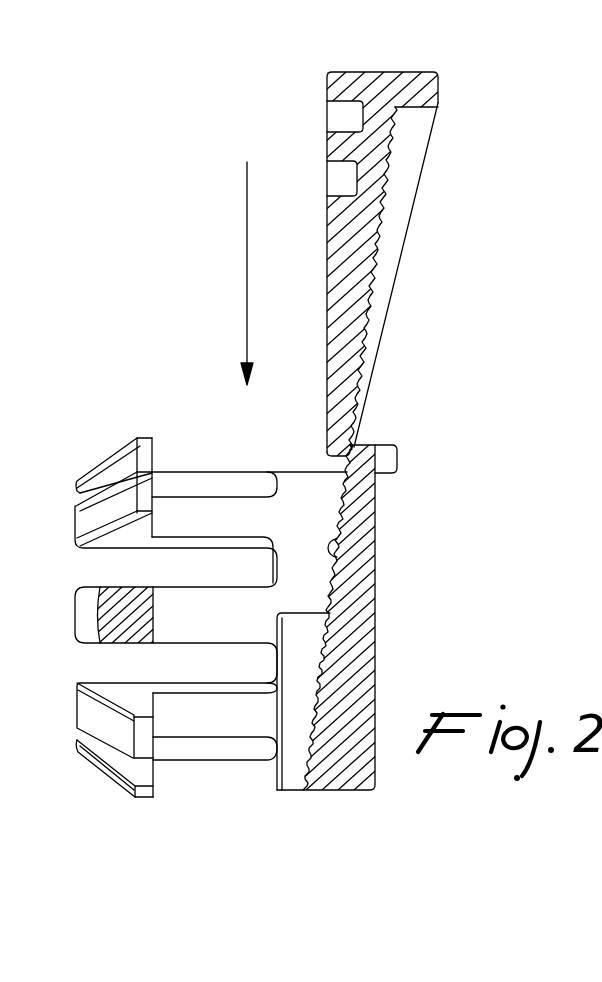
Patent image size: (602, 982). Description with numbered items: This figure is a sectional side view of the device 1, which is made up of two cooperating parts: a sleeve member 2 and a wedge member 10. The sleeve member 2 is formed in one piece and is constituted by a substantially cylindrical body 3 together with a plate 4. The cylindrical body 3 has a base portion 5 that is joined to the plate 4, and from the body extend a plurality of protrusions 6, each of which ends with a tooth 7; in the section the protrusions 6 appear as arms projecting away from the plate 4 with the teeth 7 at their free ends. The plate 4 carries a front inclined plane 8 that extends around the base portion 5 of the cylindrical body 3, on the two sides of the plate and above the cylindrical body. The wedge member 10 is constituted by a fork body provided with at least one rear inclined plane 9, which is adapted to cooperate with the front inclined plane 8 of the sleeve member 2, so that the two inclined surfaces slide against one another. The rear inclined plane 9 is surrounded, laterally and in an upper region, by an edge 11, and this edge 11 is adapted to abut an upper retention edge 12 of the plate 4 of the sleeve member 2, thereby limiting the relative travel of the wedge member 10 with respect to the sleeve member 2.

The device 1 is at (301, 436).
The sleeve member 2 is at (301, 649).
The cylindrical body 3 is at (173, 618).
The plate 4 is at (334, 792).
The base portion 5 is at (303, 492).
The protrusion 6 is at (190, 523).
The tooth 7 is at (105, 460).
The front inclined plane 8 is at (328, 543).
The rear inclined plane 9 is at (380, 217).
The wedge member 10 is at (301, 236).
The edge 11 is at (422, 88).
The upper retention edge 12 is at (386, 457).